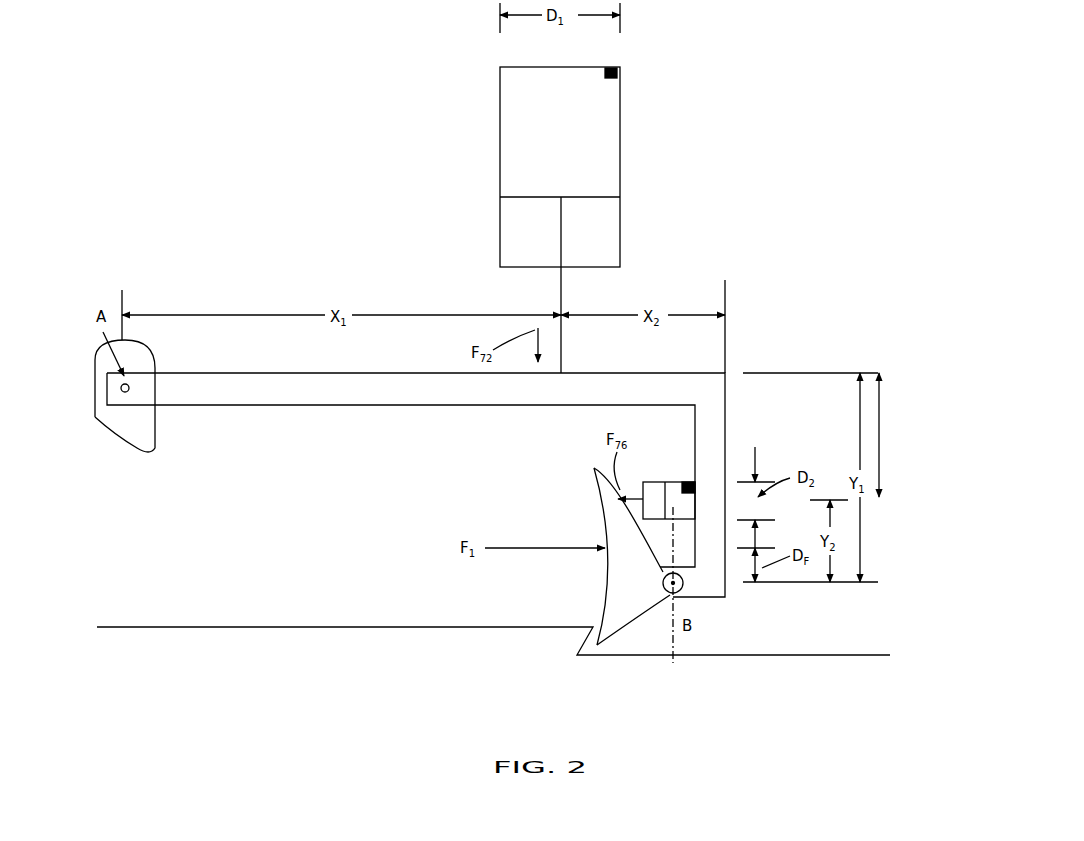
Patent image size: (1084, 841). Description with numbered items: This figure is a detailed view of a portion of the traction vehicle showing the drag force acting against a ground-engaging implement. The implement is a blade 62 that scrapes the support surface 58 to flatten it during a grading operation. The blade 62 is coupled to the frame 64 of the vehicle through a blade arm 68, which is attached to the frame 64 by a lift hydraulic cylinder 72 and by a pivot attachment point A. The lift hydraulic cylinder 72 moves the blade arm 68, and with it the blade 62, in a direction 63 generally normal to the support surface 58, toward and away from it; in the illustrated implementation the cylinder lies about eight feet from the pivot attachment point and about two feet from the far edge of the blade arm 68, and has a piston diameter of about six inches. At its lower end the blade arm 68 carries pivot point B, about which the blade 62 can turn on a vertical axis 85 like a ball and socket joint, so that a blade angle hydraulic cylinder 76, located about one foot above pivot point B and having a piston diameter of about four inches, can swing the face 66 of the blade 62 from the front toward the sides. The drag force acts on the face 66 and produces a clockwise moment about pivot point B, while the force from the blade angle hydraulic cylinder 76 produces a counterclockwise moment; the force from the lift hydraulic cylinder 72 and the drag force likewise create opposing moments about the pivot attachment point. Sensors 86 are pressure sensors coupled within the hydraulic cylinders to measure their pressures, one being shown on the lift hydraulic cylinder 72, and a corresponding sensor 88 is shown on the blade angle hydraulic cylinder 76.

The support surface 58 is at (228, 627).
The ground-engaging implement (blade) 62 is at (620, 632).
The direction 63 is at (882, 447).
The frame 64 is at (155, 418).
The face 66 is at (565, 478).
The blade arm 68 is at (325, 405).
The lift hydraulic cylinder 72 is at (622, 132).
The blade angle hydraulic cylinder 76 is at (648, 480).
The cam axis 85 is at (677, 663).
The sensors 86 is at (618, 73).
The block contact point 88 is at (686, 480).